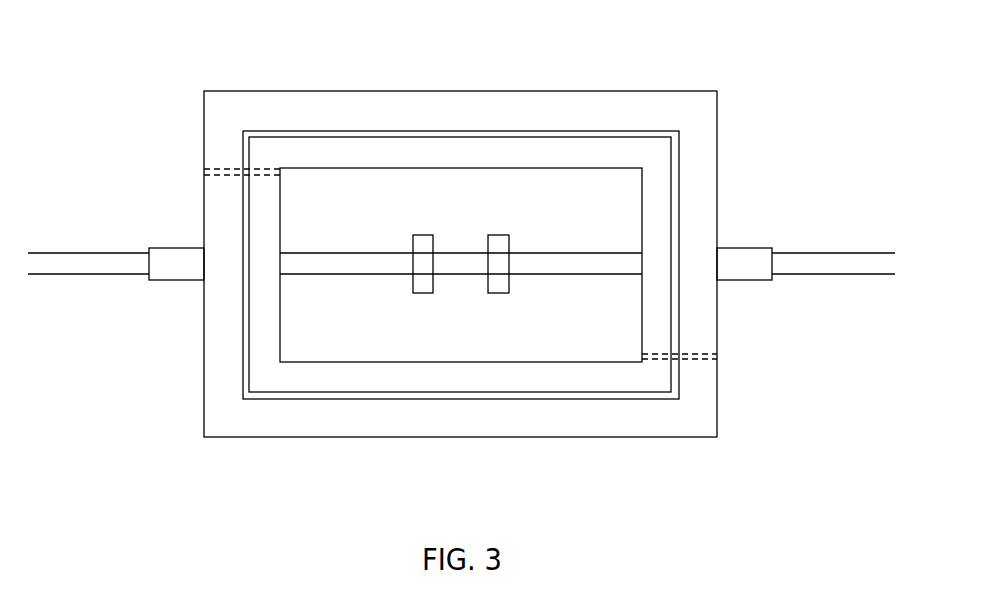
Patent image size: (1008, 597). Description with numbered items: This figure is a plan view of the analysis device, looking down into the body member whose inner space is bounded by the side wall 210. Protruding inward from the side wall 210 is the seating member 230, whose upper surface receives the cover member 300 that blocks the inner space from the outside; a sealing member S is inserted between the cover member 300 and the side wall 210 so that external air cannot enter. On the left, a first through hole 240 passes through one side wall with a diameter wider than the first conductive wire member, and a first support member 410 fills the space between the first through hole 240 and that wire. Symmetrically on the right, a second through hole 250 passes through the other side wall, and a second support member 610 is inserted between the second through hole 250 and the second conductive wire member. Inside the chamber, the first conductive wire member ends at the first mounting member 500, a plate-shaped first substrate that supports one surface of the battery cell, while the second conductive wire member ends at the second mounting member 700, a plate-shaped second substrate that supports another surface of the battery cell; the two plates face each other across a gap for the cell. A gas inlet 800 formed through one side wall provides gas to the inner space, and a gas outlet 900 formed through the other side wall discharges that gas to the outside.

The side wall 210 is at (442, 115).
The seating member 230 is at (366, 140).
The sealing member S is at (262, 131).
The cover member 300 is at (464, 212).
The first mounting member 500 is at (422, 284).
The second mounting member 700 is at (498, 284).
The first support member 410 is at (177, 270).
The second support member 610 is at (752, 258).
The first through hole 240 is at (223, 247).
The second through hole 250 is at (699, 278).
The gas inlet 800 is at (204, 173).
The gas outlet 900 is at (717, 356).